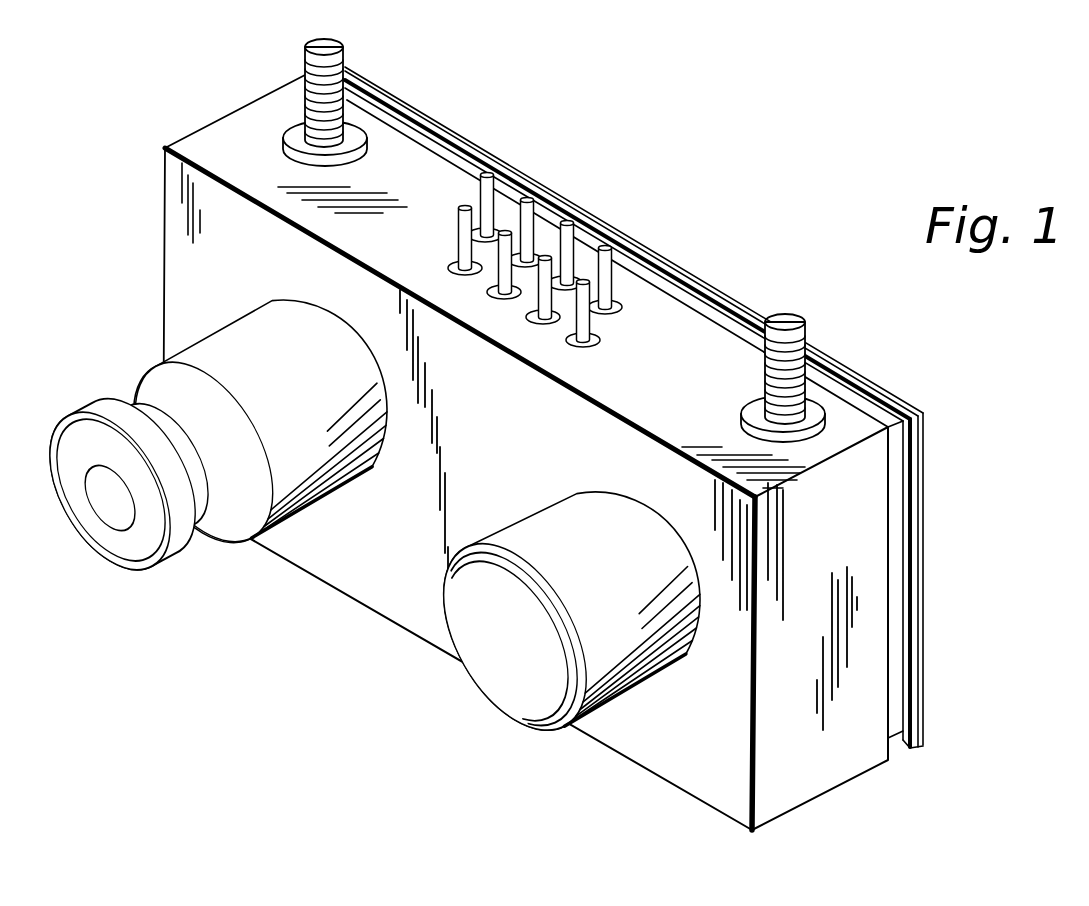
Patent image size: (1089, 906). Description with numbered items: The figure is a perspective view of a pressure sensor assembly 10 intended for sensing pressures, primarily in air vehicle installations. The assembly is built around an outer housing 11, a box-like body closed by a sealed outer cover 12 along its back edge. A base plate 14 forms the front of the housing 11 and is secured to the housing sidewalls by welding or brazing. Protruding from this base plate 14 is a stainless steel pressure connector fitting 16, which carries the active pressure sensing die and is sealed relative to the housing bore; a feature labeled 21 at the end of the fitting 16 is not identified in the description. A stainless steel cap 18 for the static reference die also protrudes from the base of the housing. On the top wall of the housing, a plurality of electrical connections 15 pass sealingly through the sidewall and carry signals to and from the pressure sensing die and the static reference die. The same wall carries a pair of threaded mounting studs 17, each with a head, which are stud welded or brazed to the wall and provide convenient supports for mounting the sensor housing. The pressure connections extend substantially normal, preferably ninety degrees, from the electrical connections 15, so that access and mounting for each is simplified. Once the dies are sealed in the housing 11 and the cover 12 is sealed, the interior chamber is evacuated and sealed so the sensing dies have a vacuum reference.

The pressure sensor assembly 10 is at (248, 138).
The outer housing 11 is at (275, 118).
The sealed outer cover 12 is at (463, 145).
The base plate 14 is at (193, 210).
The electrical connections 15 is at (577, 223).
The pressure connector fitting 16 is at (134, 393).
The threaded mounting studs 17 is at (328, 48).
The stainless steel cap 18 is at (597, 717).
The knob opening 21 is at (110, 496).